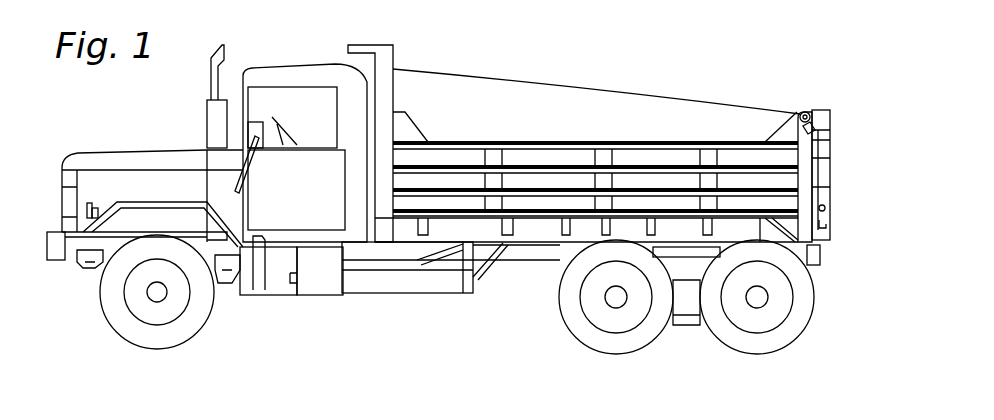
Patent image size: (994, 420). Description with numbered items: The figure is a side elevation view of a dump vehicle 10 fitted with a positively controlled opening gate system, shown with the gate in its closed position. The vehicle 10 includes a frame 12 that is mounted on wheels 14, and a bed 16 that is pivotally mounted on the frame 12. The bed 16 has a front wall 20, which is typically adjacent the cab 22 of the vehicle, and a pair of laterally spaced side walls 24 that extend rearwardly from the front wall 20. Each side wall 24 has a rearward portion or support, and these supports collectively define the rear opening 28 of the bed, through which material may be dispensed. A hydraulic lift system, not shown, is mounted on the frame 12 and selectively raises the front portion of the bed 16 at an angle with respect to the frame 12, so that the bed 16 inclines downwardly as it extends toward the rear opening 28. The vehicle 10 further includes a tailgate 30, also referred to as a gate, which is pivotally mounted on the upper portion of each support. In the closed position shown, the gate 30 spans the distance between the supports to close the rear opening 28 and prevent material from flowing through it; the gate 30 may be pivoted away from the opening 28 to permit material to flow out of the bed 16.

The dump vehicle 10 is at (617, 53).
The frame 12 is at (527, 268).
The wheels 14 is at (217, 313).
The bed 16 is at (647, 97).
The front wall 20 is at (393, 60).
The cab 22 is at (307, 66).
The side walls 24 is at (503, 133).
The rear opening 28 is at (818, 158).
The tailgate 30 is at (825, 110).